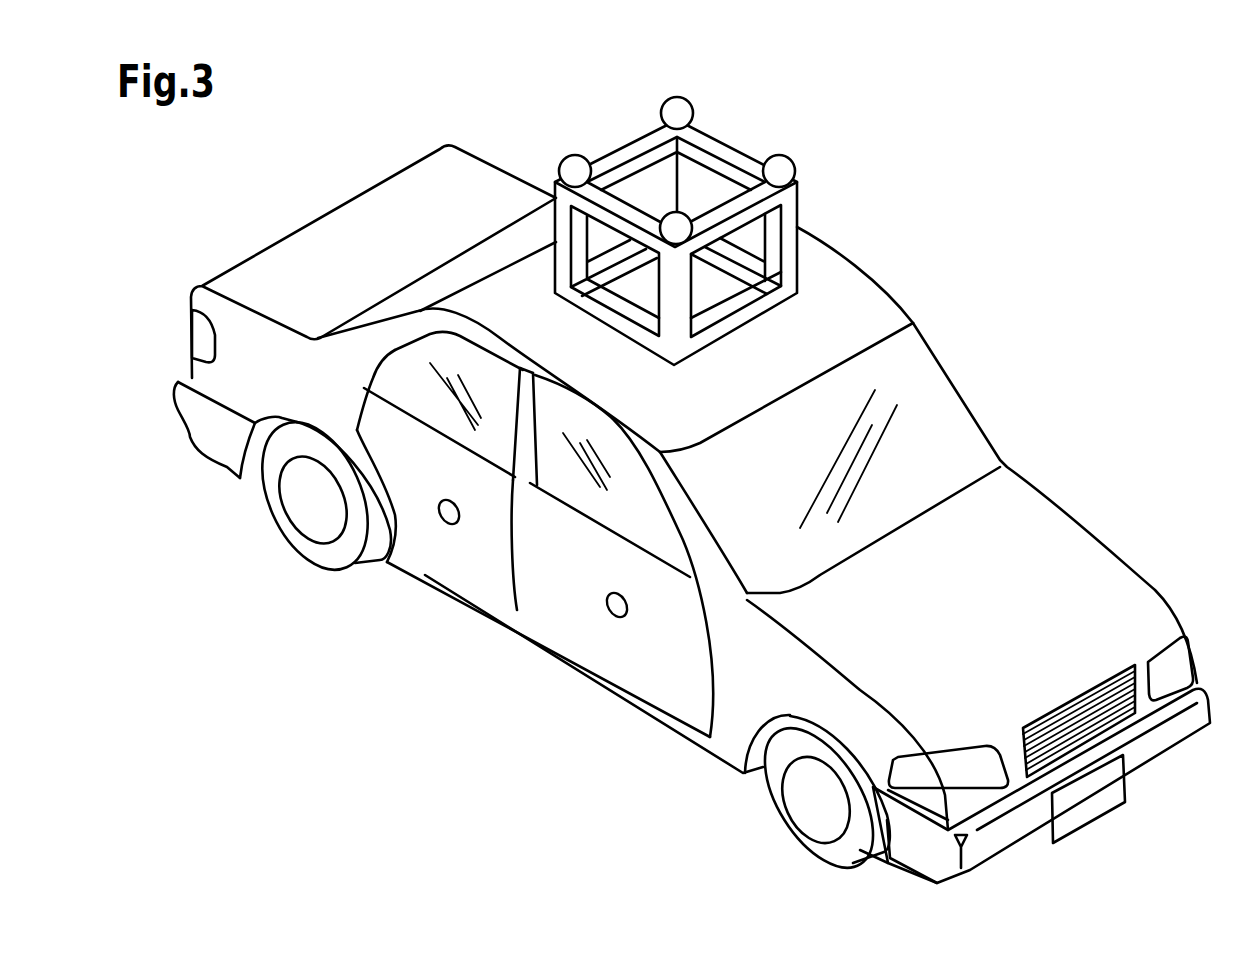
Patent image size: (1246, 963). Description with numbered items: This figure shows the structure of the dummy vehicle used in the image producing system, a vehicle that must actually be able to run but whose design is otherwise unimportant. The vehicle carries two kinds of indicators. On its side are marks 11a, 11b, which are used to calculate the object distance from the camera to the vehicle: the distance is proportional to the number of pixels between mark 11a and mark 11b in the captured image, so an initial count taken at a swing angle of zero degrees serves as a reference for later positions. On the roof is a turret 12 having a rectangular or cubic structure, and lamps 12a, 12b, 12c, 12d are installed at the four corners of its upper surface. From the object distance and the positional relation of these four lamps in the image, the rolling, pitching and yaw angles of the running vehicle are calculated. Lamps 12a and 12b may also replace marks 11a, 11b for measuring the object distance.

The mark 11a is at (442, 523).
The mark 11b is at (610, 617).
The turret 12 is at (716, 199).
The lamp 12a is at (575, 155).
The lamp 12b is at (676, 212).
The lamp 12c is at (786, 156).
The lamp 12d is at (680, 98).